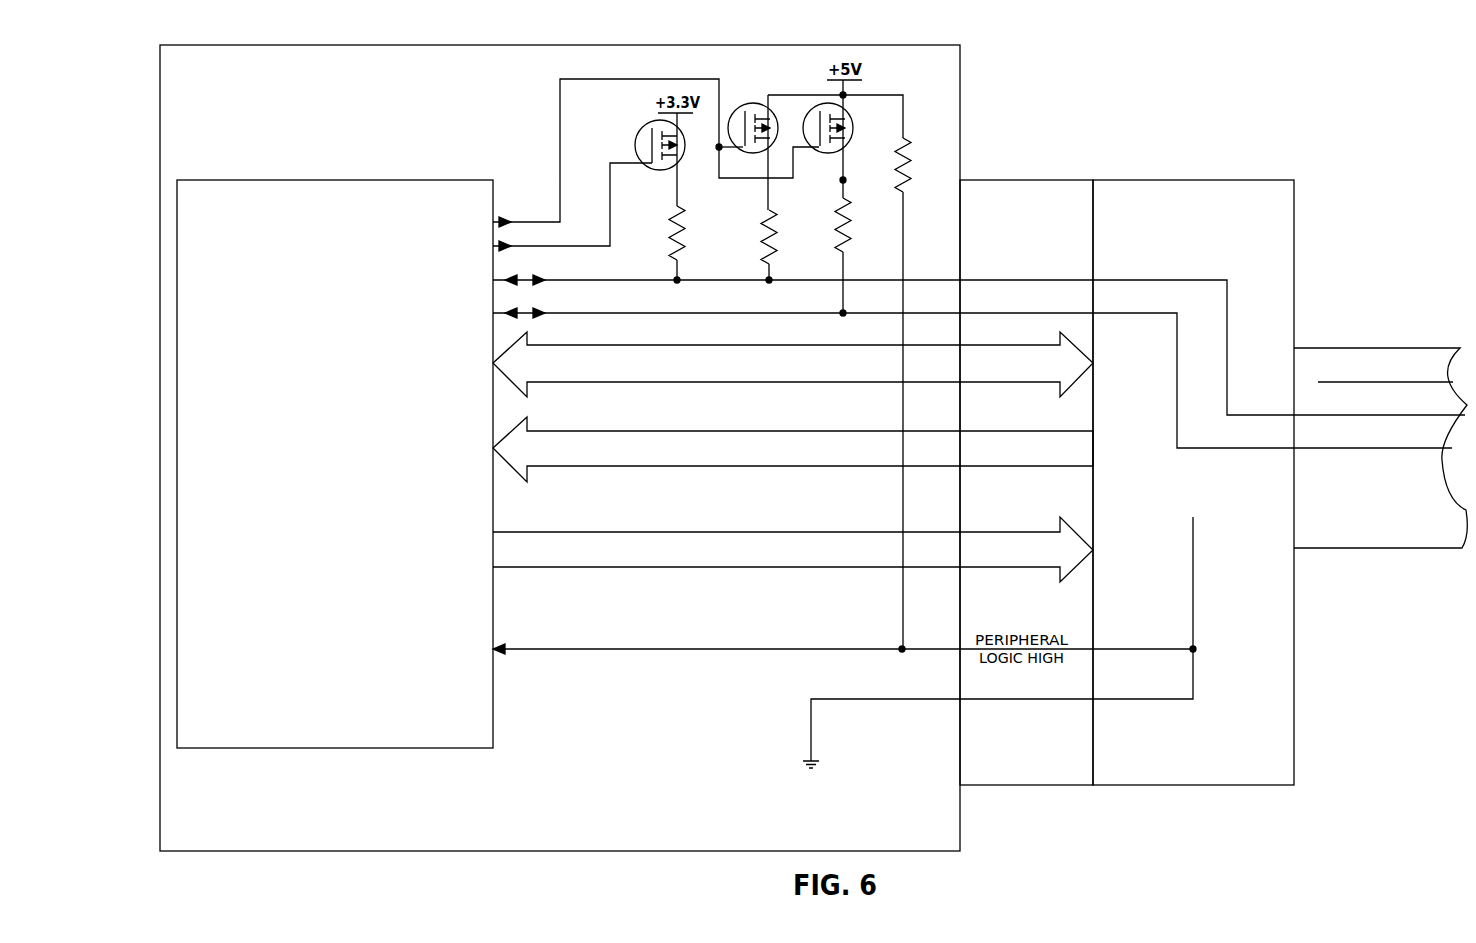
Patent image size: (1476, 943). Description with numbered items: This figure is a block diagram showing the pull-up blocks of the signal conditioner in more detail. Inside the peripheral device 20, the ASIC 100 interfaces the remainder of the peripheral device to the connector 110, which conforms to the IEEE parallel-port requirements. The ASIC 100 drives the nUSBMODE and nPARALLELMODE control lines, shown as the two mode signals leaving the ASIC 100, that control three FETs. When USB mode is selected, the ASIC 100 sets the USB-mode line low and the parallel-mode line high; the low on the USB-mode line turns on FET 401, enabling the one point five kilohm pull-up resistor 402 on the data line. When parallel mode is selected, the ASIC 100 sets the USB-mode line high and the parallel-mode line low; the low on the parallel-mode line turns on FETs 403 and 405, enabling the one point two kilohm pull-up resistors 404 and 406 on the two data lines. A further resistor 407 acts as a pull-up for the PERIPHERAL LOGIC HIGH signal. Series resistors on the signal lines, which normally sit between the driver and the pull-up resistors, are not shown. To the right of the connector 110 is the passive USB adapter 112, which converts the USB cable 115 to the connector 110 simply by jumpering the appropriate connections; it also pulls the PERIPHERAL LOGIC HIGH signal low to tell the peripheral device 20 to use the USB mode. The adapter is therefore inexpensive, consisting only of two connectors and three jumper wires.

The peripheral device 20 is at (698, 827).
The ASIC 100 is at (303, 738).
The connector 110 is at (990, 785).
The passive USB adapter 112 is at (1108, 785).
The USB cable 115 is at (1317, 548).
The FET 401 is at (686, 143).
The 1.5K pull-up resistor 402 is at (683, 228).
The FET 403 is at (752, 103).
The 1.2K pull-up resistor 404 is at (775, 232).
The FET 405 is at (853, 128).
The 1.2K pull-up resistor 406 is at (850, 222).
The resistor 407 is at (912, 147).